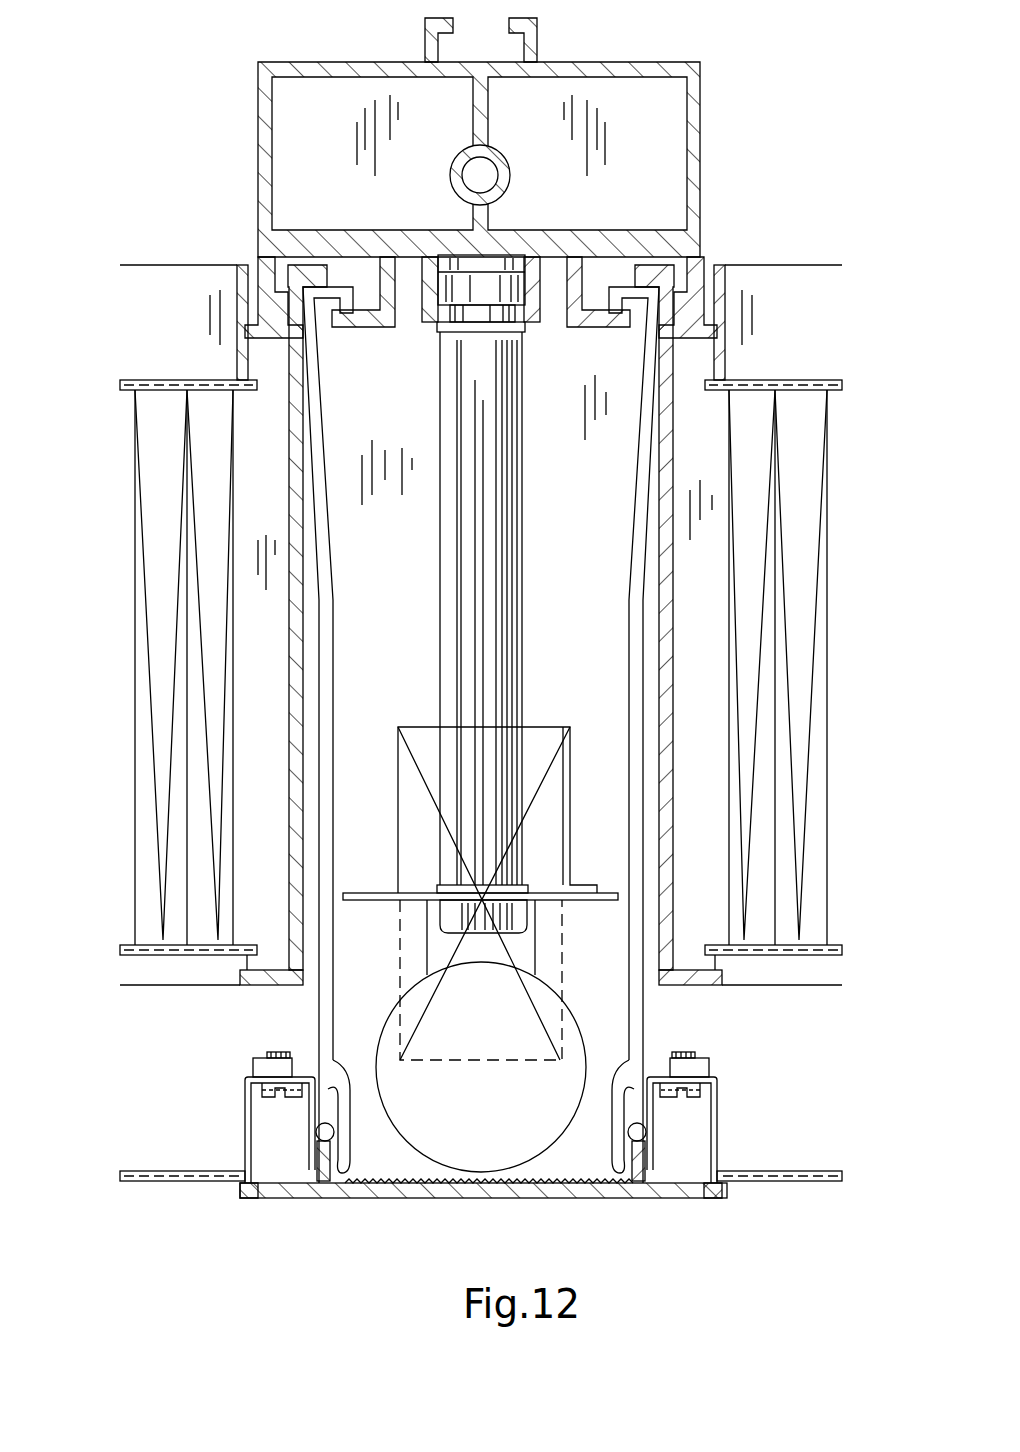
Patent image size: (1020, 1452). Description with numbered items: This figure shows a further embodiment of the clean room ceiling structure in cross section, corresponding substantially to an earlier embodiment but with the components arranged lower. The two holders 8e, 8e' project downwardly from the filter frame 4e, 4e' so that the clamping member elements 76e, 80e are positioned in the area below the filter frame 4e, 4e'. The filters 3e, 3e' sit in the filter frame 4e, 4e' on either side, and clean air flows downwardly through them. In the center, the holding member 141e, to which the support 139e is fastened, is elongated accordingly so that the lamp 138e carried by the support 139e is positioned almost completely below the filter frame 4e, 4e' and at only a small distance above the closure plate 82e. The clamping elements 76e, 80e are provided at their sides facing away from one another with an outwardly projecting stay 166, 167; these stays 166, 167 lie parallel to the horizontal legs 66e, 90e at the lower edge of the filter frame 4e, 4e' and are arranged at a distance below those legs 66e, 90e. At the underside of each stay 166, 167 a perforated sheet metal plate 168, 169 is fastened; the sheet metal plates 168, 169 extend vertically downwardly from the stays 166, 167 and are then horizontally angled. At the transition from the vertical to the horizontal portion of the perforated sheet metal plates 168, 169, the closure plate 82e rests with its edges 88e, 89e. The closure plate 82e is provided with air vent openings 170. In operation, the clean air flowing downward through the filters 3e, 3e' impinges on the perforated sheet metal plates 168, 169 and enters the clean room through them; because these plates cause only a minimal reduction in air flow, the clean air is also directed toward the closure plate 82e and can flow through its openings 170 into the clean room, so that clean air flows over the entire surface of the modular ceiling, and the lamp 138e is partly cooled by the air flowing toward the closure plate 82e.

The filter frame 4e' is at (188, 275).
The filter frame 4e is at (773, 275).
The filter 3e' is at (151, 687).
The filter 3e is at (813, 687).
The holding member 141e is at (523, 565).
The holder 8e is at (779, 617).
The holder 8e' is at (199, 617).
The support 139e is at (578, 838).
The lamp 138e is at (572, 1005).
The horizontal leg 90e is at (246, 976).
The horizontal leg 66e is at (720, 976).
The clamping member element 80e is at (322, 1057).
The clamping member element 76e is at (637, 1063).
The stay 167 is at (255, 1063).
The stay 166 is at (710, 1063).
The perforated sheet metal plate 169 is at (245, 1120).
The perforated sheet metal plate 168 is at (722, 1127).
The air vent openings 170 is at (412, 1196).
The closure plate 82e is at (630, 1201).
The edge of closure plate 88e is at (727, 1193).
The edge of closure plate 89e is at (246, 1199).